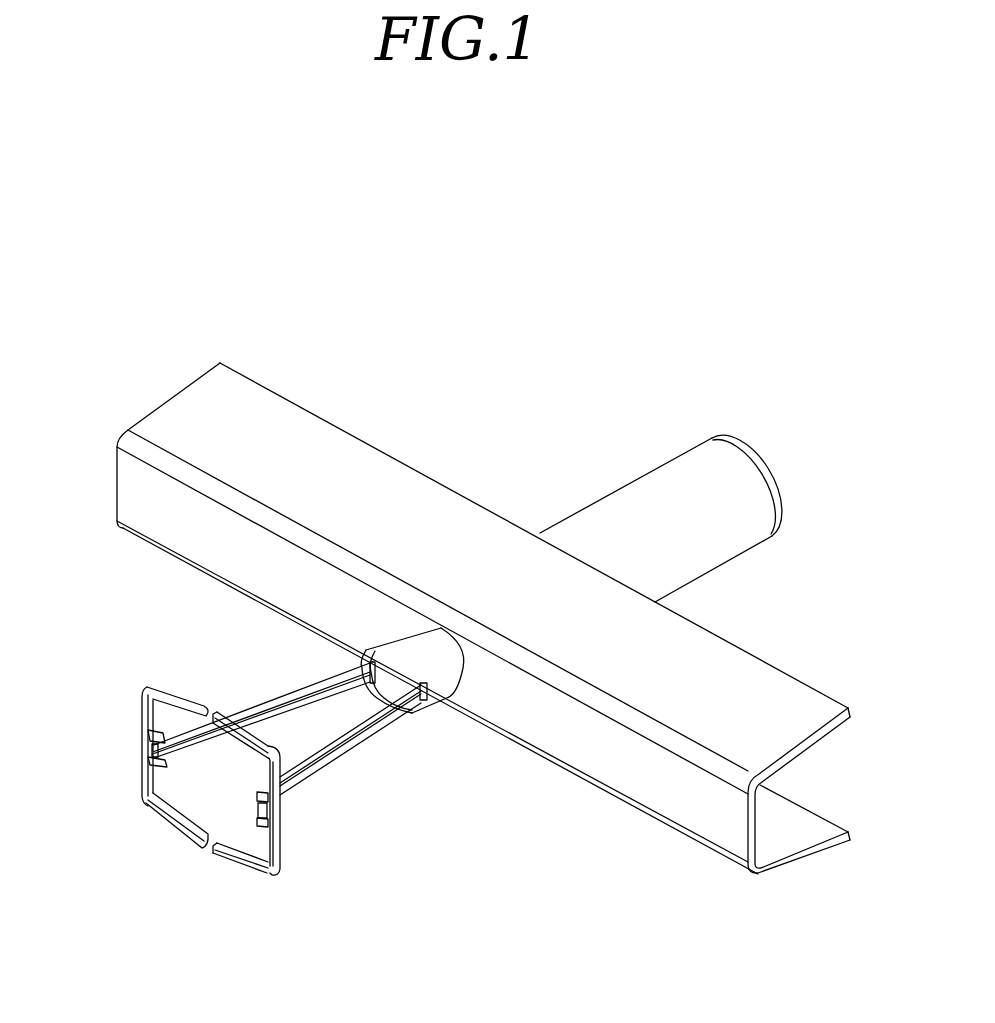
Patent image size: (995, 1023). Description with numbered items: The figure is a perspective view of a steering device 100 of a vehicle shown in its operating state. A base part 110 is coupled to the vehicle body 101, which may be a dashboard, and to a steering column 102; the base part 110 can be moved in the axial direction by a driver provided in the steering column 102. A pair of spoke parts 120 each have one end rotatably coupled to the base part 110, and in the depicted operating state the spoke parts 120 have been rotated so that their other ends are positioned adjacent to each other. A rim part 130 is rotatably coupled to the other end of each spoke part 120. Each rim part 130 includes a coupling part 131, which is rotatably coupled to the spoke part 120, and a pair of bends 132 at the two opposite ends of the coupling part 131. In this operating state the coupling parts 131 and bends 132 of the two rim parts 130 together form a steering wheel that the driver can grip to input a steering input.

The steering device 100 is at (87, 309).
The vehicle body 101 is at (254, 414).
The steering column 102 is at (720, 465).
The base part 110 is at (418, 637).
The spoke part 120 is at (257, 716).
The rim part 130 is at (153, 780).
The coupling part 131 is at (277, 803).
The bend 132 is at (248, 737).